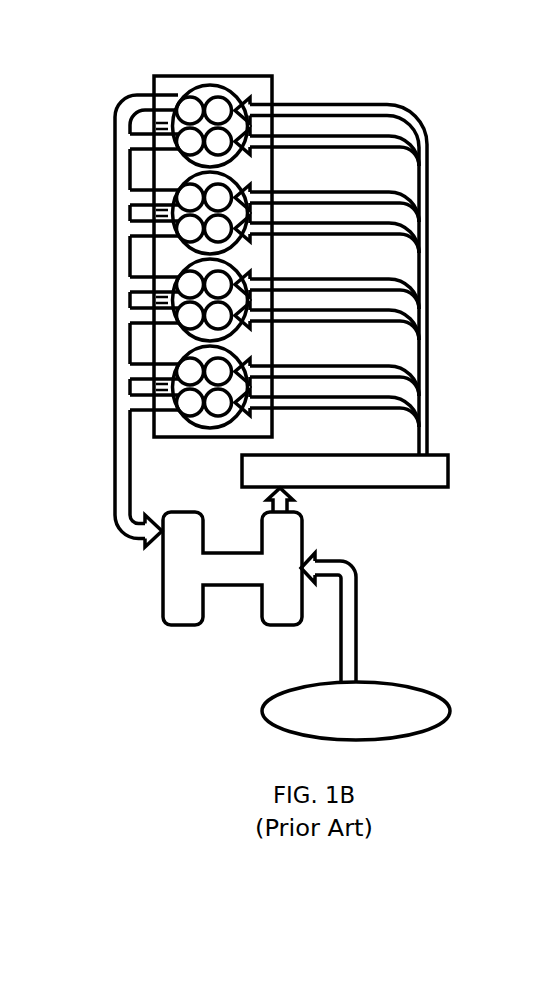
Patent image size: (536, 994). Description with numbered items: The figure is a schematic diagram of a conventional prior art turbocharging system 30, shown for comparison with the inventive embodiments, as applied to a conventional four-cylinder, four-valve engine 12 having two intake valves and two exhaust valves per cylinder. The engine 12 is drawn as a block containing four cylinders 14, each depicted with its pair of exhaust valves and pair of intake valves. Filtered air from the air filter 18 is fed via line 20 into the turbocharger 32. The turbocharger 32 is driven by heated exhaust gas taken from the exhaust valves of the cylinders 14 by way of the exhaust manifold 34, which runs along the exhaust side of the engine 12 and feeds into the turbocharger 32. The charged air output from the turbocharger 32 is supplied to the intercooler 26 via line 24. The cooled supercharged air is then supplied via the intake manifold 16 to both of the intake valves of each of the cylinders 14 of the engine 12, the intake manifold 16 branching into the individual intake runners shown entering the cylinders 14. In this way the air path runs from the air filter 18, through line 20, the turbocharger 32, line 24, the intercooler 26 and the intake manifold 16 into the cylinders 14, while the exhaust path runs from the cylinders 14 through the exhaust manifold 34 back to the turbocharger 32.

The engine 12 is at (152, 88).
The cylinders 14 is at (200, 88).
The intake manifold 16 is at (428, 182).
The air filter 18 is at (423, 687).
The line 20 is at (350, 622).
The line 24 is at (292, 497).
The intercooler 26 is at (447, 455).
The turbocharging system 30 is at (447, 46).
The turbocharger 32 is at (165, 620).
The exhaust manifold 34 is at (113, 273).